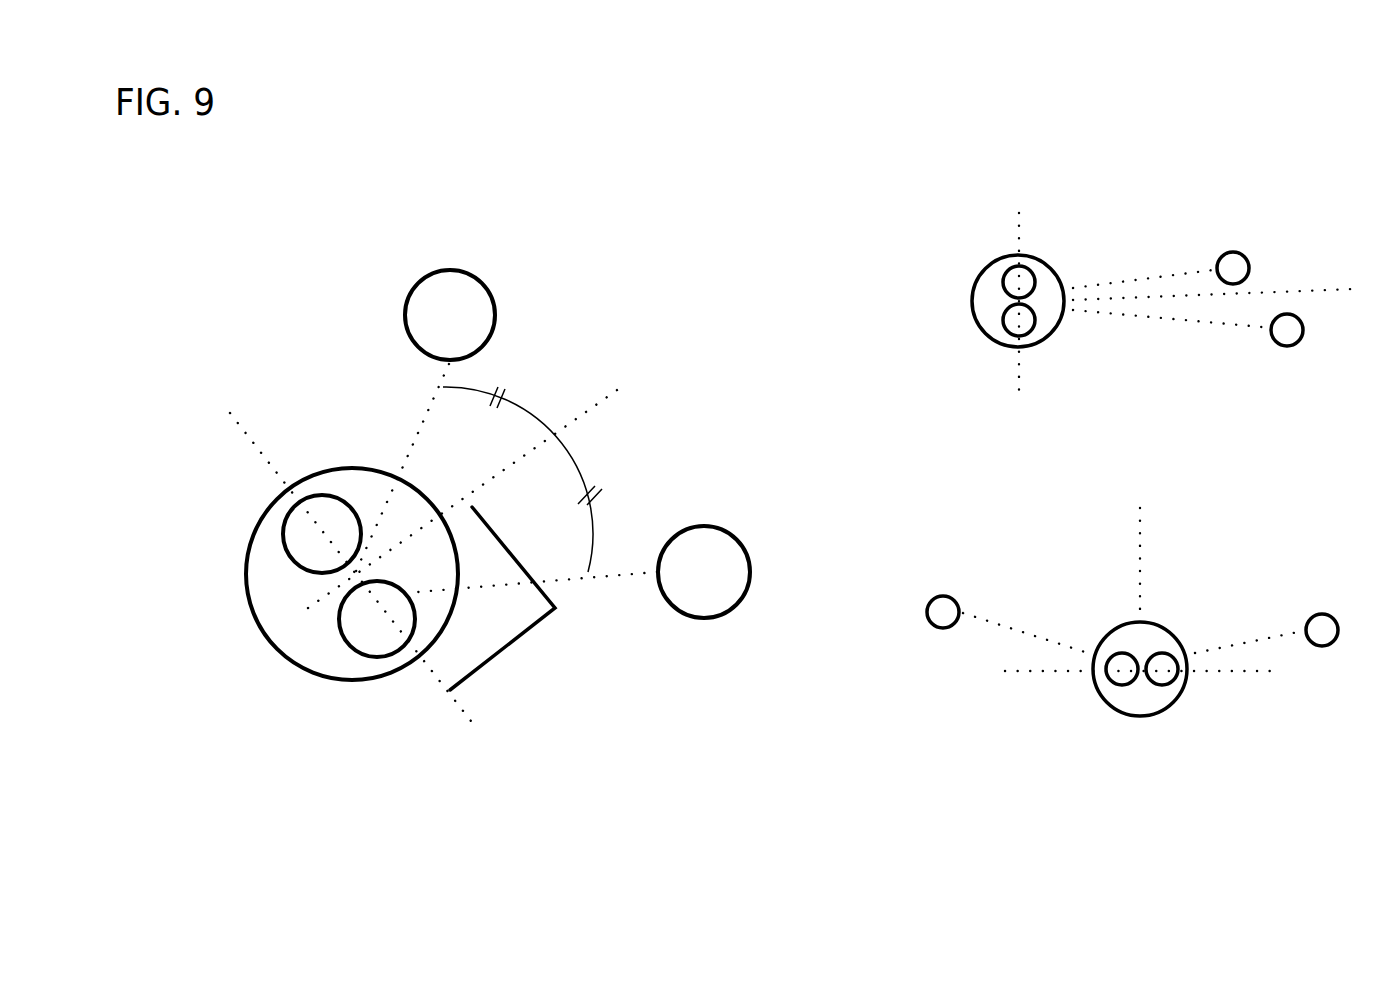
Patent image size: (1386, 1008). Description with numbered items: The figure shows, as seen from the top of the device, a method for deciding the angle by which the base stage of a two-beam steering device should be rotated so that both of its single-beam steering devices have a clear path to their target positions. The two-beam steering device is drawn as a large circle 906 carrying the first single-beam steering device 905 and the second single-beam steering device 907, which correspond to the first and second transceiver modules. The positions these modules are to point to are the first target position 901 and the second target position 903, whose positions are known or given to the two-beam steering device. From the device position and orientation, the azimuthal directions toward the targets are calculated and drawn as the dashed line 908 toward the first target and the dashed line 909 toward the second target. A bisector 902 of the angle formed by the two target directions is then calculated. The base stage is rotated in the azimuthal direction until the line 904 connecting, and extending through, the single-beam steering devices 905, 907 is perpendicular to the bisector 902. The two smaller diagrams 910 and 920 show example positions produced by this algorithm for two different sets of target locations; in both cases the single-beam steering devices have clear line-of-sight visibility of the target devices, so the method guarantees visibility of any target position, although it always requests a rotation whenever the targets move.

The target position T1 901 is at (420, 282).
The bisector 902 is at (605, 397).
The target position T2 903 is at (692, 527).
The line connecting the two single-beam steering devices 904 is at (263, 455).
The single-beam steering device 905 is at (285, 543).
The antenna array 906 is at (275, 652).
The single-beam steering device 907 is at (370, 657).
The dashed line to target T1 908 is at (403, 438).
The dashed line to target T2 909 is at (618, 574).
The example position diagram 910 is at (933, 268).
The example position diagram 920 is at (922, 567).